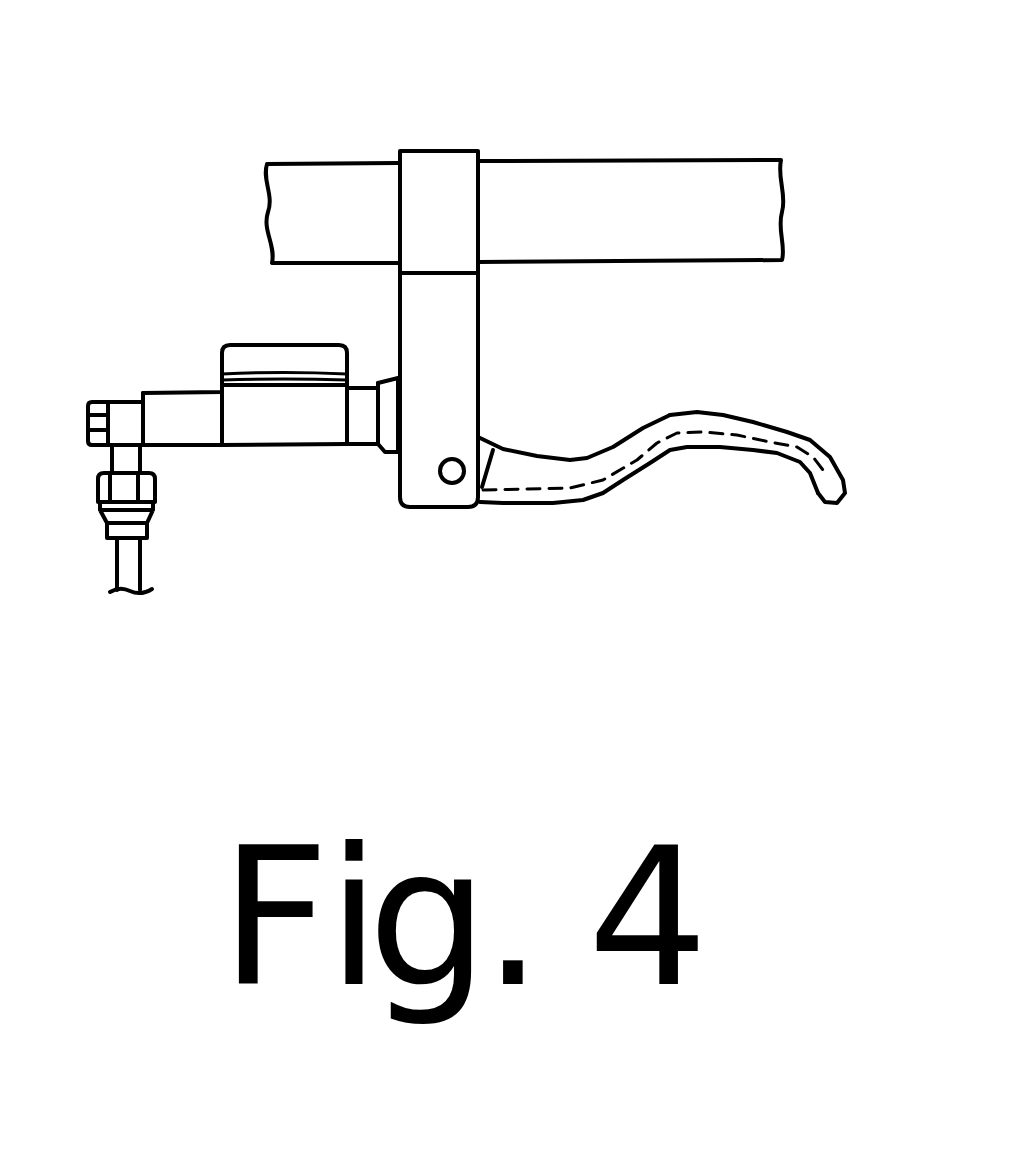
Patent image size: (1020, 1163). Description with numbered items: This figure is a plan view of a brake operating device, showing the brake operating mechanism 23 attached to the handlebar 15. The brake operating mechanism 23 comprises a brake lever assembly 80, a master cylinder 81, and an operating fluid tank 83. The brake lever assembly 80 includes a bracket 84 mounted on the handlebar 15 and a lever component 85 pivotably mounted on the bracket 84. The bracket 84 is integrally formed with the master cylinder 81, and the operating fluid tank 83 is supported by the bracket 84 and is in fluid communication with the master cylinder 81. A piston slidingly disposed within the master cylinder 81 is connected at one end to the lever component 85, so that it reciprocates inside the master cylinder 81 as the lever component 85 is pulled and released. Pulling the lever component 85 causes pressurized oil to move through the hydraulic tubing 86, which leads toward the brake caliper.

The brake operating mechanism 23 is at (555, 118).
The handlebar 15 is at (672, 161).
The brake lever assembly 80 is at (663, 472).
The master cylinder 81 is at (203, 443).
The operating fluid tank 83 is at (222, 357).
The bracket 84 is at (478, 343).
The lever component 85 is at (660, 418).
The hydraulic tubing 86 is at (140, 572).